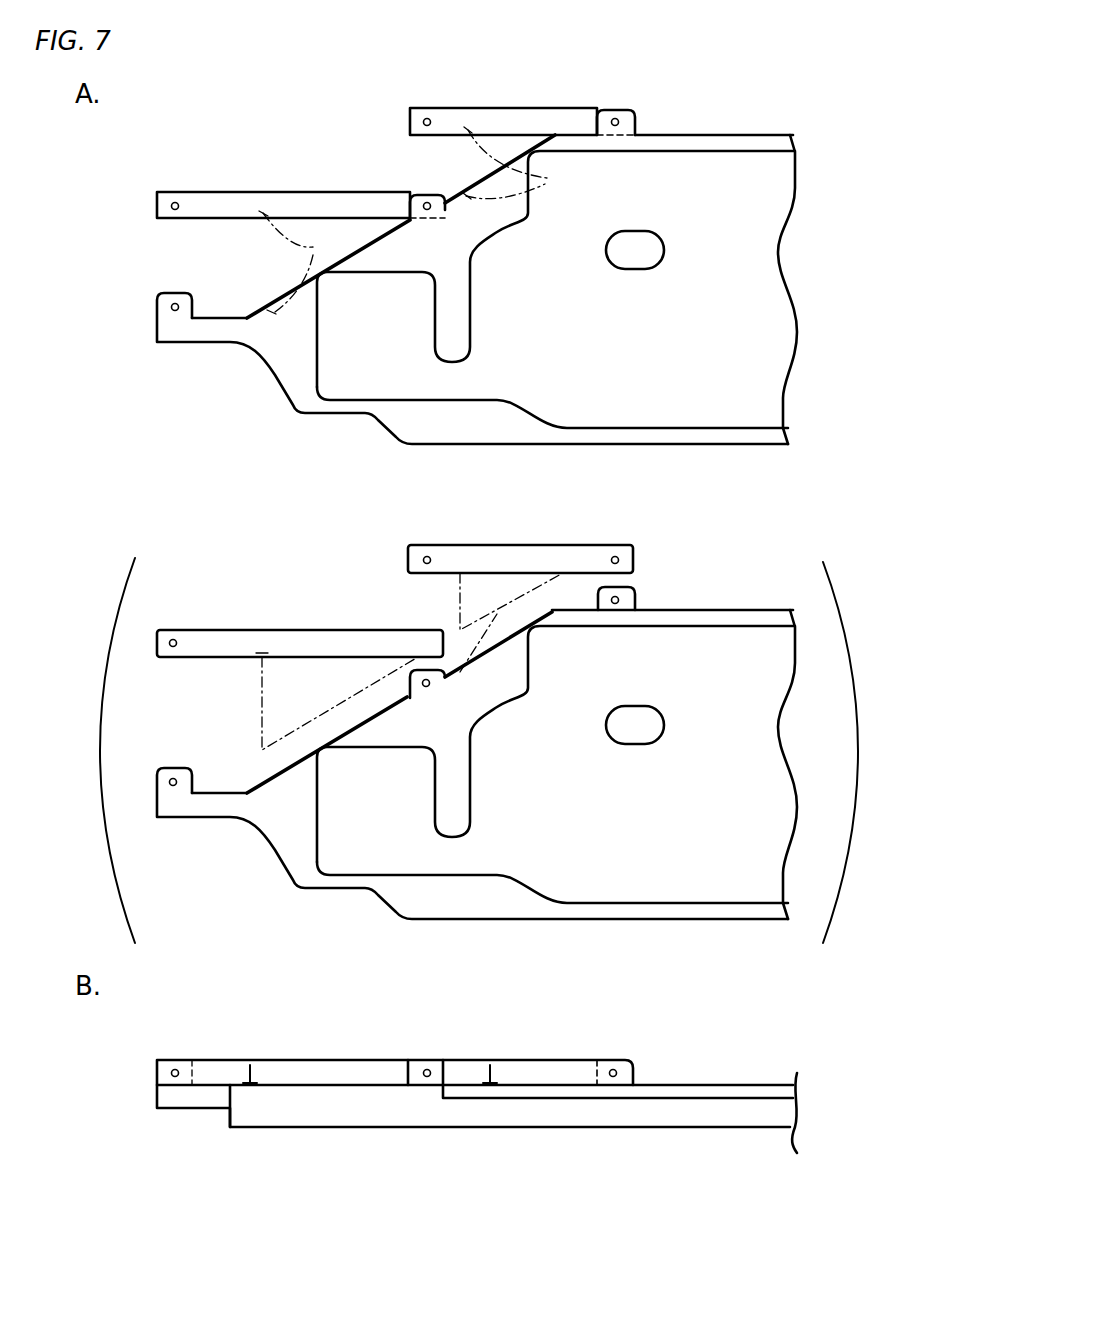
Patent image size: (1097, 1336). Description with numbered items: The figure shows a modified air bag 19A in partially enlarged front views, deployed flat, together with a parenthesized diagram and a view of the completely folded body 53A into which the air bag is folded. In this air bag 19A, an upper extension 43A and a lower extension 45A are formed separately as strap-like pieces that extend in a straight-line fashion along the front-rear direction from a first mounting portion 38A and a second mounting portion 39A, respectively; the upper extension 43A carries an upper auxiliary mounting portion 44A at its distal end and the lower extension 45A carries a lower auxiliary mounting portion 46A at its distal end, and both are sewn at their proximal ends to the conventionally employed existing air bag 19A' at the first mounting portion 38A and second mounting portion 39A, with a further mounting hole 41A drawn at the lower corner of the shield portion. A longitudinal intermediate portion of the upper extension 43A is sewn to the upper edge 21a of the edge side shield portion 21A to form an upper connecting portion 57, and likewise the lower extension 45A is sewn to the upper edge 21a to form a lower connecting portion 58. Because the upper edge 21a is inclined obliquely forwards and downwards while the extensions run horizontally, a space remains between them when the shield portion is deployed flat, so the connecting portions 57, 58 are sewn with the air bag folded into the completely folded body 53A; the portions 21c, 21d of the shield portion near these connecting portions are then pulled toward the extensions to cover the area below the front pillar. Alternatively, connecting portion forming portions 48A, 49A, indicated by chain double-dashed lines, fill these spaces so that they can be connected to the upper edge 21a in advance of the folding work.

The air bag 19A is at (722, 80).
The existing air bag 19A' is at (677, 552).
The edge side shield portion 21A is at (373, 432).
The upper edge 21a is at (273, 302).
The portion lying in the vicinity of the upper connecting portion 21c is at (443, 207).
The portion lying in the vicinity of the lower connecting portion 21d is at (288, 328).
The first mounting portion 38A is at (625, 108).
The second mounting portion 39A is at (473, 213).
The mounting hole 41A is at (173, 325).
The upper extension 43A is at (521, 105).
The upper auxiliary mounting portion 44A is at (420, 108).
The lower extension 45A is at (312, 188).
The lower auxiliary mounting portion 46A is at (172, 195).
The connecting portion forming portion 48A is at (482, 625).
The connecting portion forming portion 49A is at (300, 727).
The completely folded body 53A is at (742, 1076).
The upper connecting portion 57 is at (490, 1065).
The lower connecting portion 58 is at (250, 1065).